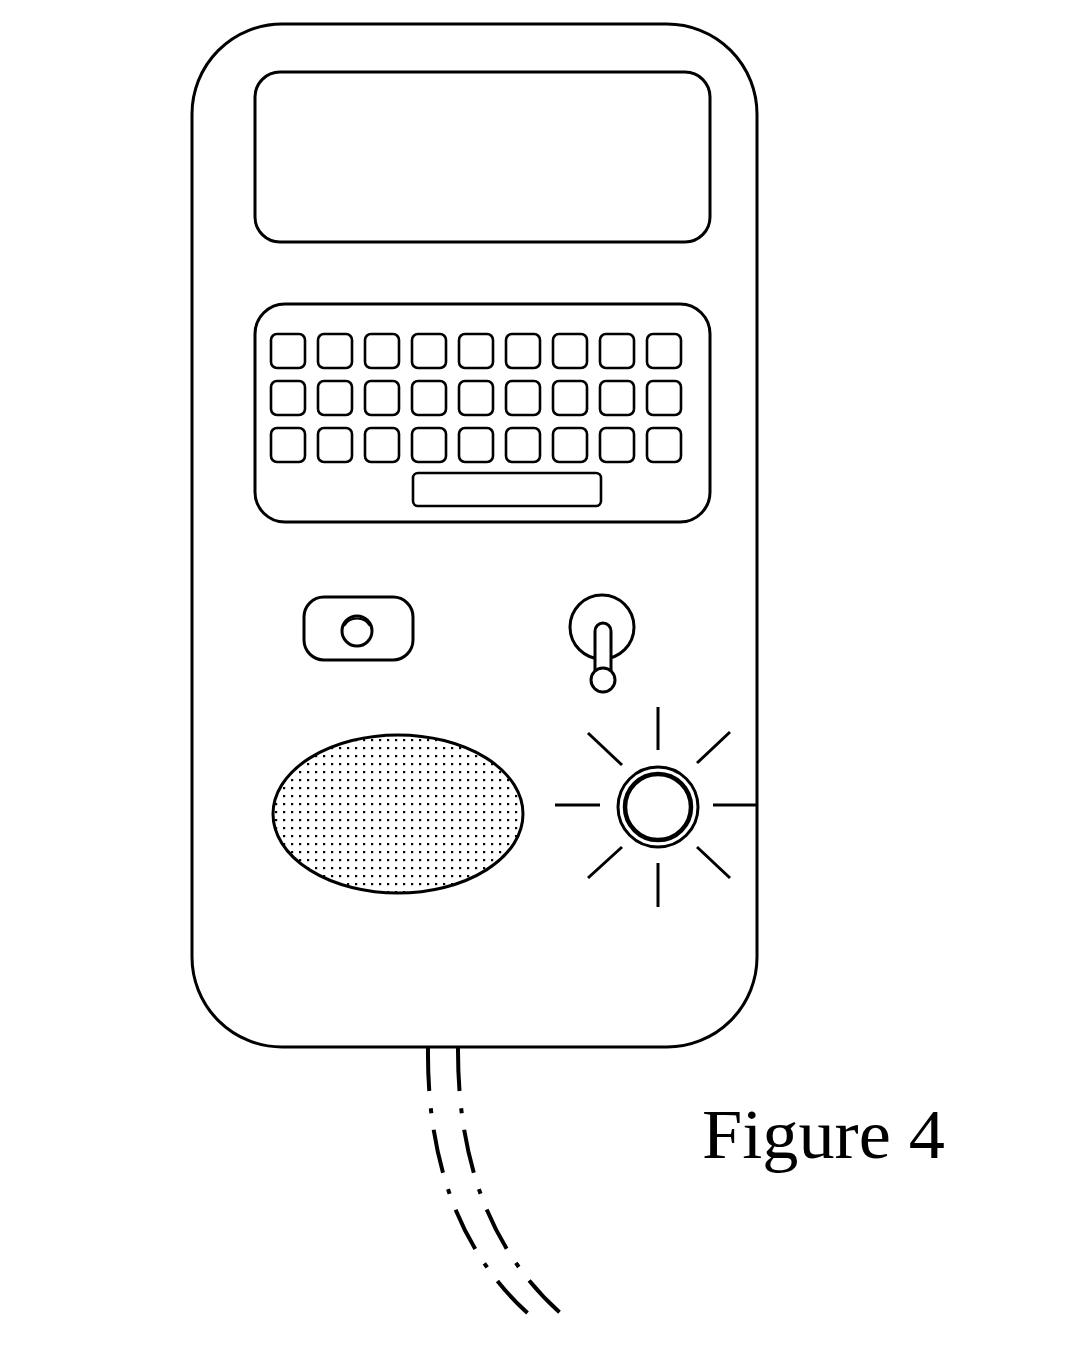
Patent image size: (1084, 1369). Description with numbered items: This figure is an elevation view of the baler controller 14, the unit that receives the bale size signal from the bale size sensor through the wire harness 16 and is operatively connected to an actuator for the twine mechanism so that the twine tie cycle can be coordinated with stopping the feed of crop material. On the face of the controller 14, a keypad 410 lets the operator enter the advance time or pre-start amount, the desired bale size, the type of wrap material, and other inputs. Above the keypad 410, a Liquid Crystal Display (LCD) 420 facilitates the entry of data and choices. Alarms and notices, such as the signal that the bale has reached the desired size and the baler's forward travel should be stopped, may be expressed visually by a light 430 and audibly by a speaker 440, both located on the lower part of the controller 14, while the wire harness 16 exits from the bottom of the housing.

The controller 14 is at (129, 525).
The wire harness 16 is at (404, 1122).
The keypad 410 is at (271, 536).
The Liquid Crystal Display (LCD) 420 is at (330, 221).
The light 430 is at (648, 847).
The speaker 440 is at (382, 893).